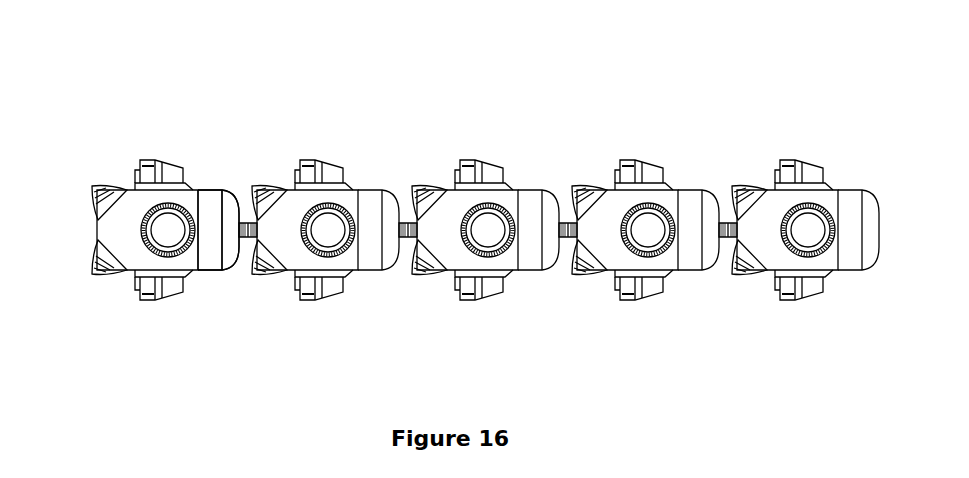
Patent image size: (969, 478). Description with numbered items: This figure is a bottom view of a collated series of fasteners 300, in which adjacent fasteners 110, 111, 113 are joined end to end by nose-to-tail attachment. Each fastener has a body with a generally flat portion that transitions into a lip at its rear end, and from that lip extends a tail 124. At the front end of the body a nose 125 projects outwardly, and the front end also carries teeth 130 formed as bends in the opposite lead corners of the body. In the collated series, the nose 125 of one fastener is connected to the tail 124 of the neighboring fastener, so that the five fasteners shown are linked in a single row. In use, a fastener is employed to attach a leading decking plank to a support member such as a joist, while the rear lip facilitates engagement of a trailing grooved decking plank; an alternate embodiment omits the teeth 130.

The fastener 110 is at (618, 203).
The fastener 111 is at (125, 213).
The fastener 113 is at (772, 203).
The tail 124 is at (239, 214).
The nose 125 is at (248, 223).
The teeth 130 is at (97, 265).
The collated series of fasteners 300 is at (207, 310).